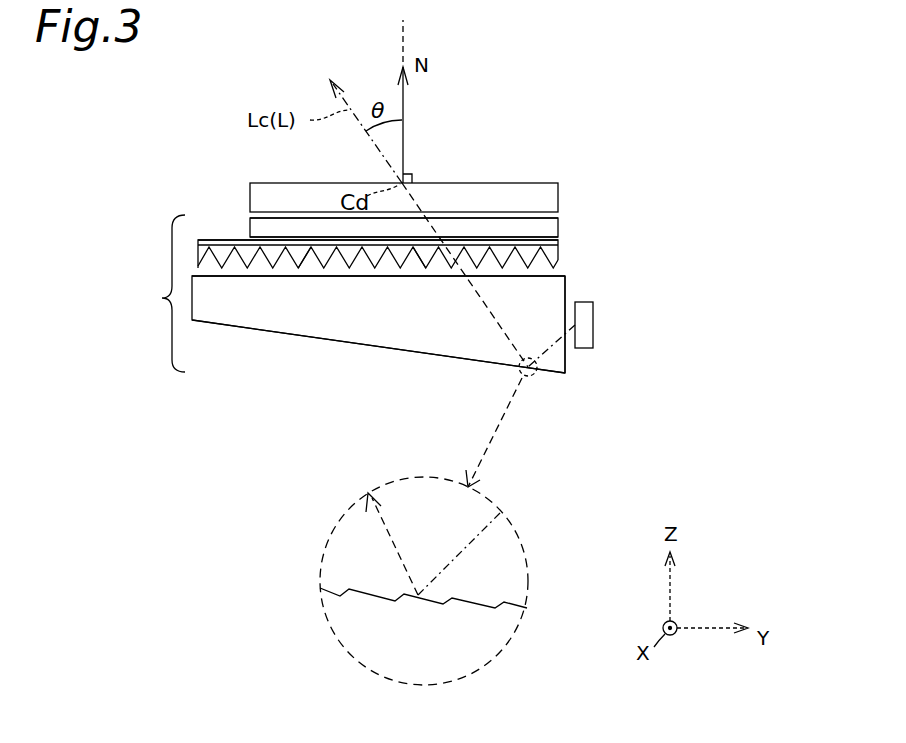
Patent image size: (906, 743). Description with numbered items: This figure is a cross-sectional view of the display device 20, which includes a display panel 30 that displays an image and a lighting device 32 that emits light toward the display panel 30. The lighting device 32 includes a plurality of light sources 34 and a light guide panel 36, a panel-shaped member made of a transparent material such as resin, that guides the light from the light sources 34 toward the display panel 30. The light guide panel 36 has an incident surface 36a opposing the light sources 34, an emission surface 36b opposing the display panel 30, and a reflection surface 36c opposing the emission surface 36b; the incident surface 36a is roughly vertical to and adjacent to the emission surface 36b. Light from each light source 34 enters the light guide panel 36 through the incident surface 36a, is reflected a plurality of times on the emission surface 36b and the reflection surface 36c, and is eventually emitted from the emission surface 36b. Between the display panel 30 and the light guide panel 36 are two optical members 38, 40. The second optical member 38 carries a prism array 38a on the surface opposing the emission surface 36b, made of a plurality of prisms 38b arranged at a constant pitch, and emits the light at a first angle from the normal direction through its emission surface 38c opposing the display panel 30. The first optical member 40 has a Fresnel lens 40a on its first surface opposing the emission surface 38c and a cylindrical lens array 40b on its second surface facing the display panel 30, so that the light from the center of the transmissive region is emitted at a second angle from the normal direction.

The display device 20 is at (688, 166).
The display panel 30 is at (558, 193).
The lighting device 32 is at (160, 293).
The light source 34 is at (593, 325).
The light guide panel 36 is at (473, 336).
The incident surface 36a is at (565, 362).
The emission surface 36b is at (230, 276).
The reflection surface 36c is at (313, 337).
The second optical member 38 is at (558, 250).
The prism array 38a is at (426, 258).
The prism 38b is at (305, 262).
The emission surface 38c is at (302, 240).
The first optical member 40 is at (558, 231).
The Fresnel lens 40a is at (527, 238).
The cylindrical lens array 40b is at (470, 218).